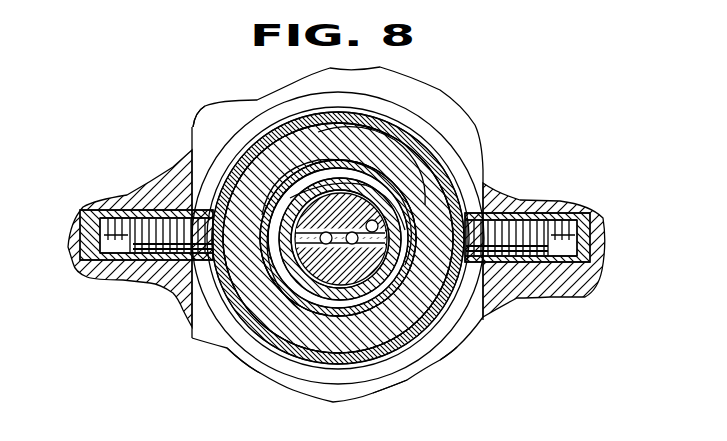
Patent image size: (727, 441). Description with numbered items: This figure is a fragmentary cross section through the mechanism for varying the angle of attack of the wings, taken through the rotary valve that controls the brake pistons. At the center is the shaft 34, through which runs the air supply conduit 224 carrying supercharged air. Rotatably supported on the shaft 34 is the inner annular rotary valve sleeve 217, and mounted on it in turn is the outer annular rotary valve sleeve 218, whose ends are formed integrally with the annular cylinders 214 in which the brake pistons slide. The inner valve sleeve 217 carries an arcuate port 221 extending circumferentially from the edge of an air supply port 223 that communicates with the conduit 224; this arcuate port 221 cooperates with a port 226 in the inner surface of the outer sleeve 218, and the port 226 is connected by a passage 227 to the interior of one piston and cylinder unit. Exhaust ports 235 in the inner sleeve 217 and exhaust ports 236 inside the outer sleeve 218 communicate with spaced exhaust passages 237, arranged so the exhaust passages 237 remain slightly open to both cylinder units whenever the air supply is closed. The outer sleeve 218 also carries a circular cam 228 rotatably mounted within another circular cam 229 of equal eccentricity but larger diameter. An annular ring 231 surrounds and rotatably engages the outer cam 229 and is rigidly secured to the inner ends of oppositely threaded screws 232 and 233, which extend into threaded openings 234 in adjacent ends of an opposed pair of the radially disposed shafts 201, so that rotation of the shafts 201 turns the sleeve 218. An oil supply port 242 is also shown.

The radially disposed shaft 201 is at (80, 237).
The annular cylinder 214 is at (446, 126).
The inner annular rotary valve sleeve 217 is at (333, 373).
The outer annular rotary valve sleeve 218 is at (312, 165).
The arcuate port 221 is at (290, 193).
The air supply port 223 is at (258, 188).
The air supply conduit 224 is at (366, 125).
The port 226 is at (240, 360).
The passage 227 is at (192, 339).
The circular cam 228 is at (303, 147).
The circular cam 229 is at (300, 350).
The annular ring 231 is at (400, 120).
The oppositely threaded screw 232 is at (160, 223).
The oppositely threaded screw 233 is at (522, 227).
The threaded opening 234 is at (583, 230).
The exhaust port 235 is at (430, 172).
The exhaust port 236 is at (447, 330).
The exhaust passage 237 is at (410, 355).
The oil supply port 242 is at (458, 182).
The shaft 34 is at (390, 150).